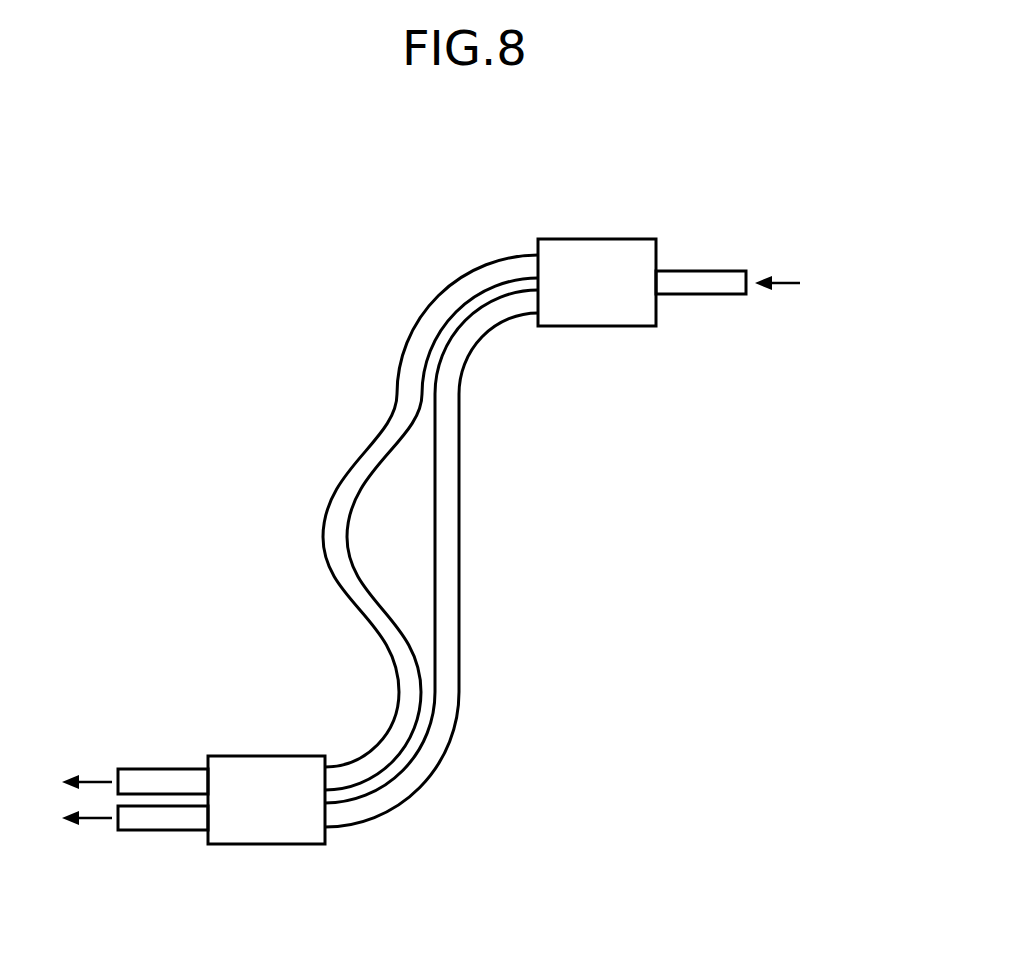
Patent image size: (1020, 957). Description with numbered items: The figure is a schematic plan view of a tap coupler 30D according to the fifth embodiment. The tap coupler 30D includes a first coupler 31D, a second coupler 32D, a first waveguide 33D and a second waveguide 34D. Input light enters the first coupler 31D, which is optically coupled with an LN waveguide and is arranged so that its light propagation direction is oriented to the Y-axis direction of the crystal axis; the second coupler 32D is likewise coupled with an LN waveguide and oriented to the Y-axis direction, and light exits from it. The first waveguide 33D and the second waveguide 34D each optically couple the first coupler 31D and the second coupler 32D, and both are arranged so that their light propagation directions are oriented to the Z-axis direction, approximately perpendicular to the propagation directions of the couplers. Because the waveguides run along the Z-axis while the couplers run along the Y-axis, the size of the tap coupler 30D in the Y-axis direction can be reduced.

The tap coupler 30D is at (745, 143).
The first coupler 31D is at (623, 246).
The second coupler 32D is at (261, 767).
The first waveguide 33D is at (452, 523).
The second waveguide 34D is at (358, 488).